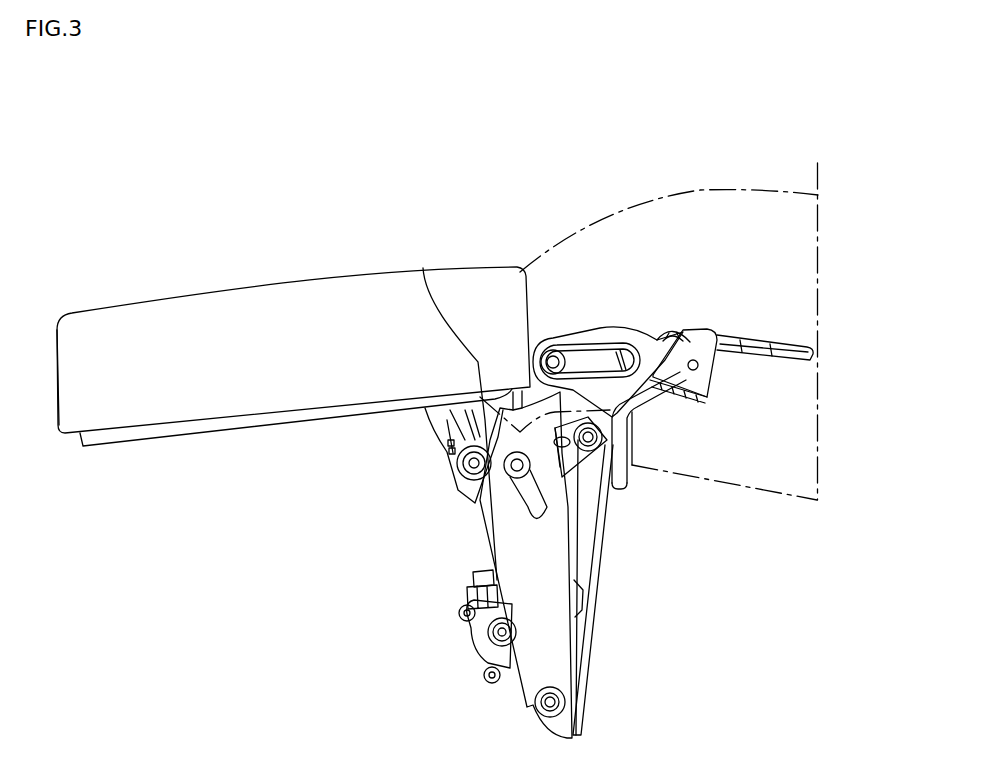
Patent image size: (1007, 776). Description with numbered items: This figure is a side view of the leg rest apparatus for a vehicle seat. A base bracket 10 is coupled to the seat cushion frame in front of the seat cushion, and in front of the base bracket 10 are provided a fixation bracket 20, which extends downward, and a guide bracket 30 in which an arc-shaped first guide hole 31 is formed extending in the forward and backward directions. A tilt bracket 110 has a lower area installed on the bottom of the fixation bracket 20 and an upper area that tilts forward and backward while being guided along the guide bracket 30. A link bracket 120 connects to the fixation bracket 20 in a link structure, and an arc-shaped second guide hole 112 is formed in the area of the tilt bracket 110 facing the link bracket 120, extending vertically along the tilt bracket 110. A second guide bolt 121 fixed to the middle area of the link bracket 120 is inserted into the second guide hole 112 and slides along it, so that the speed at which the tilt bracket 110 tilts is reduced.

The base bracket 10 is at (738, 333).
The fixation bracket 20 is at (592, 543).
The guide bracket 30 is at (640, 340).
The first guide hole 31 is at (591, 363).
The tilt bracket 110 is at (548, 663).
The second guide hole 112 is at (528, 517).
The link bracket 120 is at (423, 268).
The second guide bolt 121 is at (482, 488).